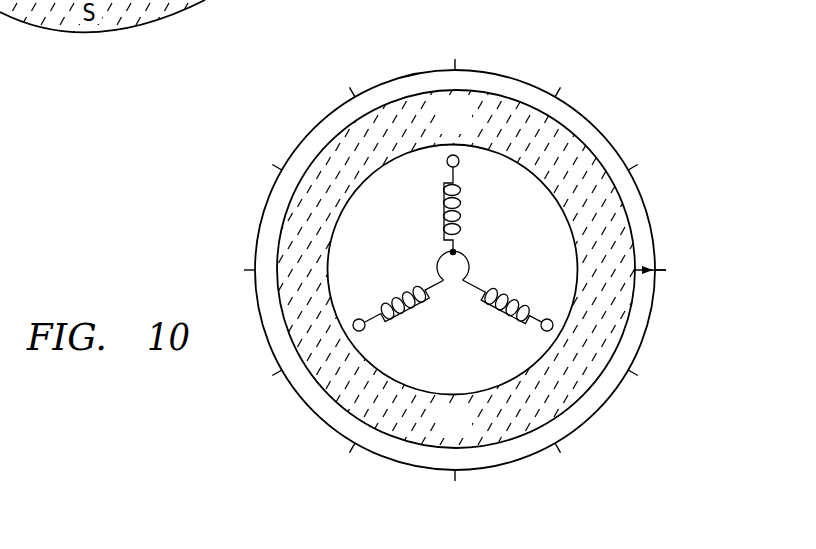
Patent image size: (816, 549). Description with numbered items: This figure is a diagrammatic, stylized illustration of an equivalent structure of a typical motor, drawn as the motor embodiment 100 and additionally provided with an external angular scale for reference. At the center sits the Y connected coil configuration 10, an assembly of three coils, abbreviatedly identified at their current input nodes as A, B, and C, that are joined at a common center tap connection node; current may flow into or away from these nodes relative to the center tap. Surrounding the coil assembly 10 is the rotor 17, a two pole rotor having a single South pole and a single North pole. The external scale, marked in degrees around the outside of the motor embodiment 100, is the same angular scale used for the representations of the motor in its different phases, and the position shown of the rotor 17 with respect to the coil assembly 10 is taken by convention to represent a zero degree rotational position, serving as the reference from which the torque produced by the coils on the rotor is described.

The motor embodiment 100 is at (526, 47).
The rotor 17 is at (584, 399).
The Y connected coil configuration 10 is at (446, 316).